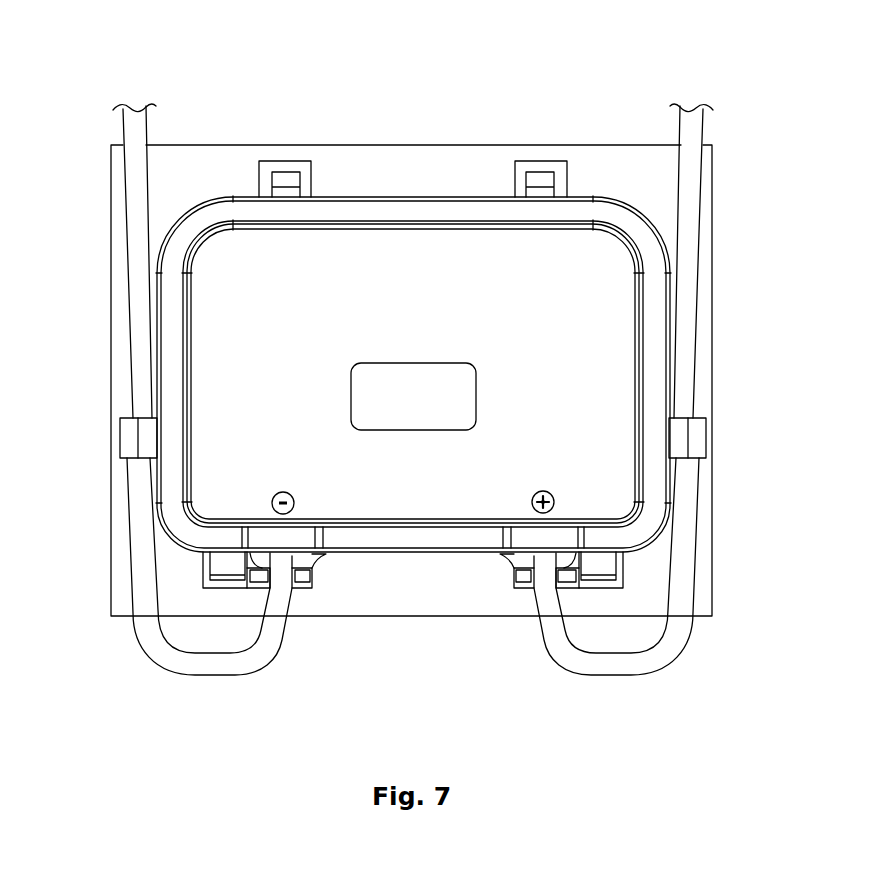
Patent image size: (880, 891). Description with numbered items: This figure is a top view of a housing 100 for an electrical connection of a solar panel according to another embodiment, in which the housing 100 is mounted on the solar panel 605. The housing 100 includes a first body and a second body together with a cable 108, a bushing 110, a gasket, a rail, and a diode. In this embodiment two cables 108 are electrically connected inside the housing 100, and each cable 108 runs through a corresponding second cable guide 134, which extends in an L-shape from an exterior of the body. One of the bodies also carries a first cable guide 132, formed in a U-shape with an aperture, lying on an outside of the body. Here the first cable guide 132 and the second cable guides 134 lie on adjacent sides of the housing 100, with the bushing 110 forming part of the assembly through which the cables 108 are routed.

The housing 100 is at (116, 54).
The solar panel 605 is at (433, 160).
The cable 108 is at (207, 677).
The bushing 110 is at (301, 558).
The first cable guide 132 is at (300, 590).
The second cable guide 134 is at (119, 437).